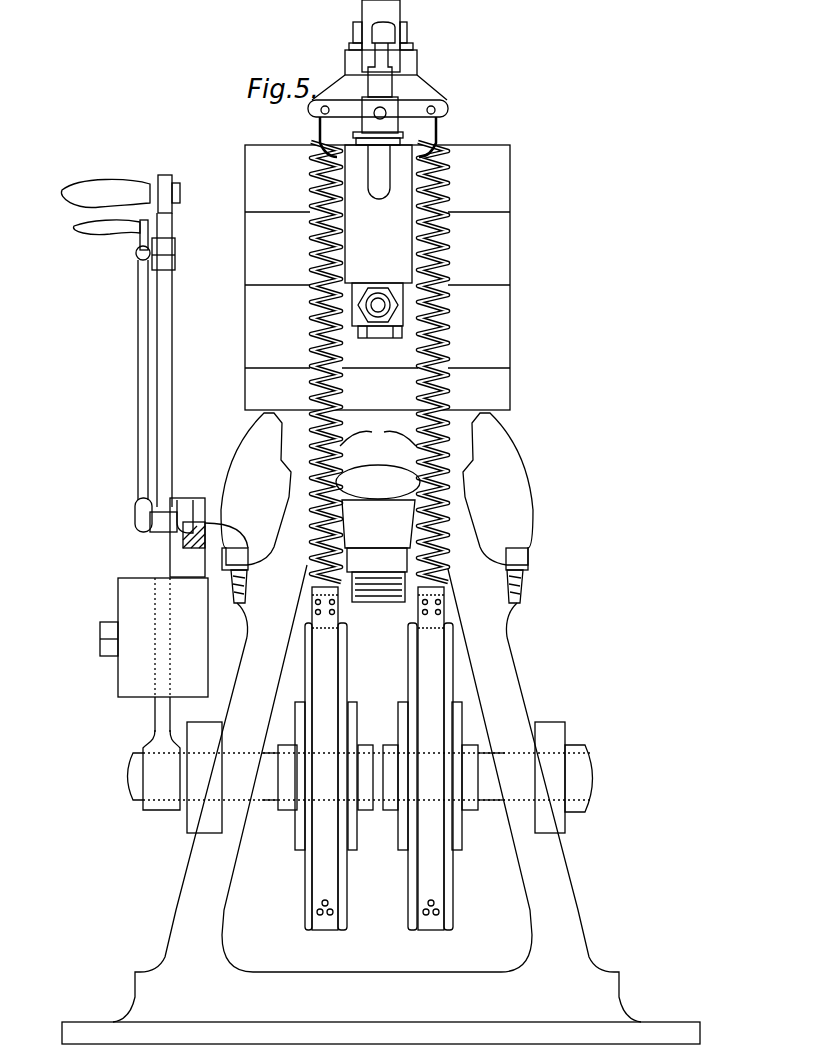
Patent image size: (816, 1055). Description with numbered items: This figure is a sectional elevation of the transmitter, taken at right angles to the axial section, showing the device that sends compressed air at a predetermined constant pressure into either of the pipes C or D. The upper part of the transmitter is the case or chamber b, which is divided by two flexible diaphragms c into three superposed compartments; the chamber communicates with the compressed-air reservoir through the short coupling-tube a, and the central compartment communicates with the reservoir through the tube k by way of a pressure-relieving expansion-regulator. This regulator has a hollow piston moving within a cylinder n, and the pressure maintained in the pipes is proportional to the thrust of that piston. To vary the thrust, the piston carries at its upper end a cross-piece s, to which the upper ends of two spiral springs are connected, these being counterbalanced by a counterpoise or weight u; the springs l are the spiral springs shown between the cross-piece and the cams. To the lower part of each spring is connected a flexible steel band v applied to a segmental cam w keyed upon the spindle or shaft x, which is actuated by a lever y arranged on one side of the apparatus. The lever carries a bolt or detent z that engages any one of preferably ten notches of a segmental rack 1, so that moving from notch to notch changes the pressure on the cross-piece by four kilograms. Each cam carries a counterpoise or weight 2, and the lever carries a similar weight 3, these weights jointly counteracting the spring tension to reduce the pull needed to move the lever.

The counterpoise or weight u is at (372, 12).
The coupling-tube a is at (402, 27).
The cross-piece s is at (410, 107).
The case or chamber b is at (518, 258).
The flexible membranes or diaphragms c is at (388, 277).
The cylinder n is at (378, 214).
The tube k is at (377, 305).
The springs l is at (379, 372).
The pipe C is at (256, 508).
The pipe D is at (498, 508).
The lever y is at (162, 398).
The bolt or detent z is at (186, 500).
The segmental rack 1 is at (185, 545).
The counterpoise or weight 3 is at (191, 641).
The flexible steel band v is at (325, 673).
The segmental cam w is at (342, 647).
The spindle or shaft x is at (268, 767).
The counterpoise or weight 2 is at (303, 833).